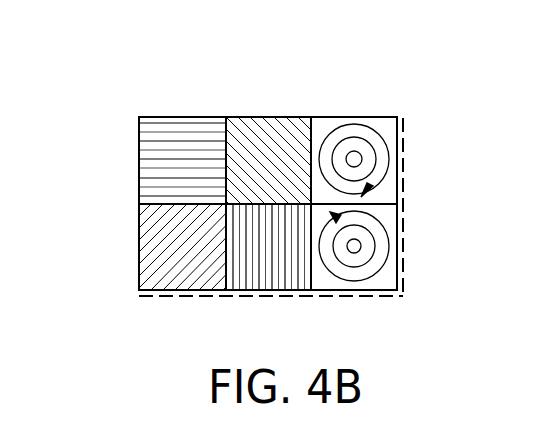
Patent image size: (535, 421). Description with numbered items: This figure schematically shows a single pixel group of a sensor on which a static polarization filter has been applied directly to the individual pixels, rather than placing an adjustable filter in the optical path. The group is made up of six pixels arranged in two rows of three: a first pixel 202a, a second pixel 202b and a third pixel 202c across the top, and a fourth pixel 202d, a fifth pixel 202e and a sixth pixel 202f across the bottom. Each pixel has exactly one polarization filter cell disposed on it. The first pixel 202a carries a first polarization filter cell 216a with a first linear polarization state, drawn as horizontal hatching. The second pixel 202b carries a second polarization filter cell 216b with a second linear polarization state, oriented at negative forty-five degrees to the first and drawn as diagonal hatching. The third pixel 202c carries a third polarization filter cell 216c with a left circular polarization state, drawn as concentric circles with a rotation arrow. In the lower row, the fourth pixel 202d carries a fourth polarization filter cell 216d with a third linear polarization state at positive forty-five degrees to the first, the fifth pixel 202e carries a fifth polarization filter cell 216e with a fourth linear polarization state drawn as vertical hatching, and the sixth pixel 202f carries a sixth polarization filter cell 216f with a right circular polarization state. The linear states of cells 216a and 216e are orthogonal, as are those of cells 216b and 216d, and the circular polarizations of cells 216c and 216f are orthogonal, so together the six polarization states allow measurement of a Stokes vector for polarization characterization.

The first pixel 202a is at (139, 140).
The first polarization filter cell 216a is at (157, 159).
The second pixel 202b is at (287, 117).
The second polarization filter cell 216b is at (240, 137).
The third pixel 202c is at (335, 117).
The third polarization filter cell 216c is at (378, 134).
The fourth pixel 202d is at (139, 260).
The fourth polarization filter cell 216d is at (155, 230).
The fifth pixel 202e is at (270, 290).
The fifth polarization filter cell 216e is at (247, 275).
The sixth pixel 202f is at (382, 292).
The sixth polarization filter cell 216f is at (338, 278).